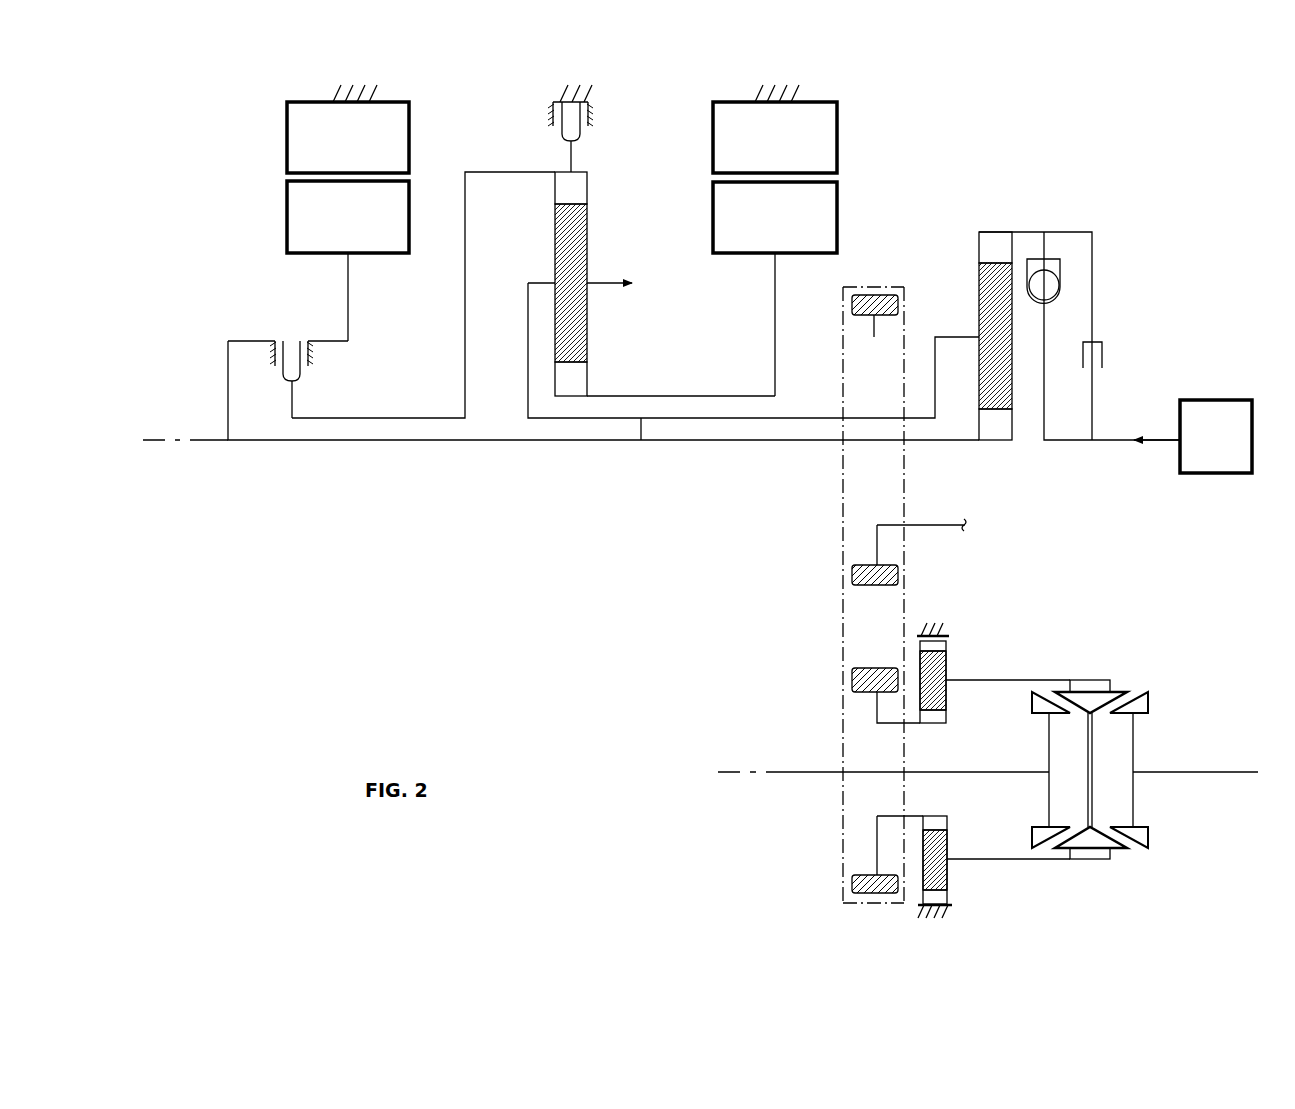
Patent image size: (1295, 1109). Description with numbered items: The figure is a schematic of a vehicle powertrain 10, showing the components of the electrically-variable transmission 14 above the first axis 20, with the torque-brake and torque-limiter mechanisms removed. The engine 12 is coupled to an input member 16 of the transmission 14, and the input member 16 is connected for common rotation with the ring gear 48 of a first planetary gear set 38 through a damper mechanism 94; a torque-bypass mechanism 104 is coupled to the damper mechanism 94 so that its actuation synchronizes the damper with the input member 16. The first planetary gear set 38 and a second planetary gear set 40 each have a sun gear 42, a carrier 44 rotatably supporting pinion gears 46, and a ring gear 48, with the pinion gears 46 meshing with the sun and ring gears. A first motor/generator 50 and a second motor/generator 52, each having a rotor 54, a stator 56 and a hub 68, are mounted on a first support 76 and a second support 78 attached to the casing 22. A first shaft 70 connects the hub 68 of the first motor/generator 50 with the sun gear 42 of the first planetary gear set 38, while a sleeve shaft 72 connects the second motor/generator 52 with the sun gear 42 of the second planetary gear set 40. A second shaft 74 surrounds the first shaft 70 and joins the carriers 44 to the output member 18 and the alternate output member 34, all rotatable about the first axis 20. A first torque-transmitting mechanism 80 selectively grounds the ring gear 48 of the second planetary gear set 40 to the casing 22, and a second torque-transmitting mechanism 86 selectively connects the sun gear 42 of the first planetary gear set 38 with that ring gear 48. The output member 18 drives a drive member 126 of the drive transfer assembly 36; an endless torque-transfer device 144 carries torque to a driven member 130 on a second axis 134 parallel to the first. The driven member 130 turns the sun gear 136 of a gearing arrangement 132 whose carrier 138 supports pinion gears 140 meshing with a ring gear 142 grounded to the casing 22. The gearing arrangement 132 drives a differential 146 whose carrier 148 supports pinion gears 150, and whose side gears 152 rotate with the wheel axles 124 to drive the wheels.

The powertrain 10 is at (1182, 130).
The engine 12 is at (1214, 407).
The electrically-variable transmission 14 is at (1128, 228).
The input member 16 is at (1156, 442).
The output member 18 is at (917, 338).
The first axis 20 is at (198, 446).
The casing 22 is at (585, 90).
The alternate output member 34 is at (608, 285).
The drive transfer assembly 36 is at (1120, 585).
The first planetary gear set 38 is at (975, 218).
The second planetary gear set 40 is at (626, 180).
The sun gear 42 is at (589, 380).
The carrier 44 is at (534, 282).
The pinion gears 46 is at (589, 250).
The ring gear 48 is at (589, 190).
The first motor/generator 50 is at (215, 158).
The second motor/generator 52 is at (866, 104).
The rotor 54 is at (305, 216).
The stator 56 is at (400, 135).
The hub 68 is at (349, 296).
The first shaft 70 is at (436, 442).
The sleeve shaft 72 is at (734, 395).
The second shaft 74 is at (641, 442).
The first support 76 is at (335, 96).
The second support 78 is at (778, 90).
The first torque-transmitting mechanism 80 is at (530, 125).
The second torque-transmitting mechanism 86 is at (315, 358).
The damper mechanism 94 is at (1063, 253).
The torque-bypass mechanism 104 is at (1110, 350).
The wheel axles 124 is at (975, 774).
The drive member 126 is at (872, 293).
The driven member 130 is at (855, 668).
The gearing arrangement 132 is at (968, 876).
The second axis 134 is at (752, 777).
The sun gear 136 is at (948, 720).
The carrier 138 is at (1000, 680).
The pinion gears 140 is at (948, 662).
The ring gear 142 is at (952, 638).
The endless torque-transfer device 144 is at (842, 498).
The differential 146 is at (1152, 676).
The carrier 148 is at (1090, 678).
The pinion gears 150 is at (1117, 850).
The side gears 152 is at (1150, 838).